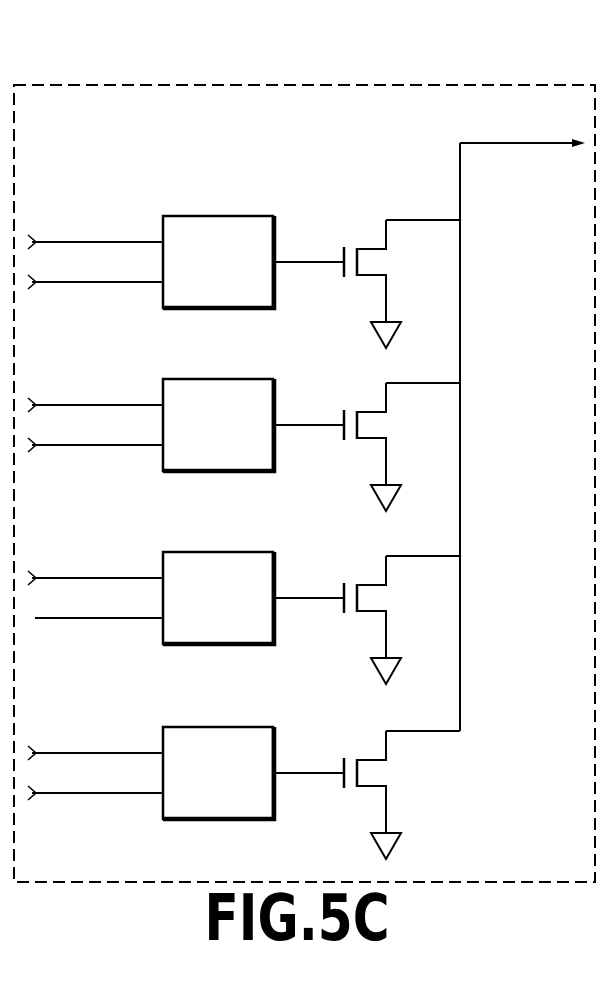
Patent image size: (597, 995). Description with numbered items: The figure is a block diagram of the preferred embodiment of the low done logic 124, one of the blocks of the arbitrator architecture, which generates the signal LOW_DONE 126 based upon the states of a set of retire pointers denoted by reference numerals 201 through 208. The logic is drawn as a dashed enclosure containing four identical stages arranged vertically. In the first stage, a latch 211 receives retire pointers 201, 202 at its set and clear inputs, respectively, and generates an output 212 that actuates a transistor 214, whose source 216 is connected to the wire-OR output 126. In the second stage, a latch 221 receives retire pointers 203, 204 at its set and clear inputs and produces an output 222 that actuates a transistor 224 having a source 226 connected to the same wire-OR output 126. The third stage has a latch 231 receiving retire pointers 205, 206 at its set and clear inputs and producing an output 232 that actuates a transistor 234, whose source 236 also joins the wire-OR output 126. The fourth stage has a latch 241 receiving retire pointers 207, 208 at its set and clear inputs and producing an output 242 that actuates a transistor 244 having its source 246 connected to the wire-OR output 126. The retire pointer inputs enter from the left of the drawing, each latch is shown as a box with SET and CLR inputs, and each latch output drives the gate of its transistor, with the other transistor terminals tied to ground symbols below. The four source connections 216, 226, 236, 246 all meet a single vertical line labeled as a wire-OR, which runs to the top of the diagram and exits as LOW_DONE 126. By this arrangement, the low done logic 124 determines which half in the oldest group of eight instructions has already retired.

The low done logic 124 is at (343, 85).
The LOW_DONE signal 126 is at (520, 150).
The retire pointer RET[5] 201 is at (148, 238).
The retire pointer RET[9] 202 is at (120, 286).
The retire pointer RET[13] 203 is at (148, 402).
The retire pointer RET[17] 204 is at (120, 449).
The retire pointer RET[21] 205 is at (148, 575).
The retire pointer RET[25] 206 is at (120, 622).
The retire pointer RET[27] 207 is at (148, 750).
The retire pointer RET[1] 208 is at (120, 797).
The latch 211 is at (262, 273).
The latch 221 is at (262, 436).
The latch 231 is at (262, 609).
The latch 241 is at (262, 784).
The output 212 is at (304, 261).
The output 222 is at (304, 424).
The output 232 is at (304, 597).
The output 242 is at (304, 772).
The transistor 214 is at (390, 260).
The transistor 224 is at (390, 423).
The transistor 234 is at (390, 596).
The transistor 244 is at (390, 771).
The source 216 is at (405, 220).
The source 226 is at (405, 383).
The source 236 is at (405, 556).
The source 246 is at (405, 731).